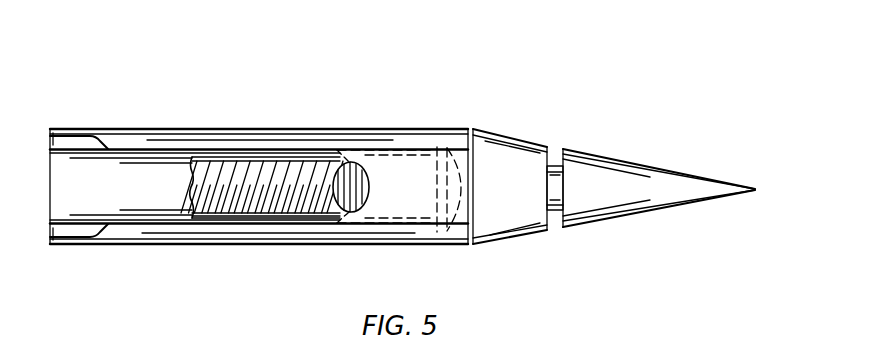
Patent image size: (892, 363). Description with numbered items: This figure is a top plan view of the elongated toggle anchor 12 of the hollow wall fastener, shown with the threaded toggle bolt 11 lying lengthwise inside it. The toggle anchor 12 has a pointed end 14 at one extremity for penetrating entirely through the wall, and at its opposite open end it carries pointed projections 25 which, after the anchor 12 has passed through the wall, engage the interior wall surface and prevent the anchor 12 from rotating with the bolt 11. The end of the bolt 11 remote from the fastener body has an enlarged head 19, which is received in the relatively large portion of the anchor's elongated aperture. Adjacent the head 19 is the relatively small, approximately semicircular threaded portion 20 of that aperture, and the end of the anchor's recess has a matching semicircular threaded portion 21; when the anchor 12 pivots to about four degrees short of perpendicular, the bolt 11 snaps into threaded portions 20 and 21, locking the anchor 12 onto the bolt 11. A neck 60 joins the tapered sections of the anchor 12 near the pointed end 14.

The threaded toggle bolt 11 is at (262, 217).
The elongated toggle anchor 12 is at (196, 245).
The pointed end 14 is at (700, 178).
The enlarged end or head 19 is at (447, 146).
The relatively small threaded portion 20 is at (328, 158).
The semicircular threaded portion 21 is at (367, 164).
The pointed projections 25 is at (77, 136).
The neck 60 is at (555, 152).